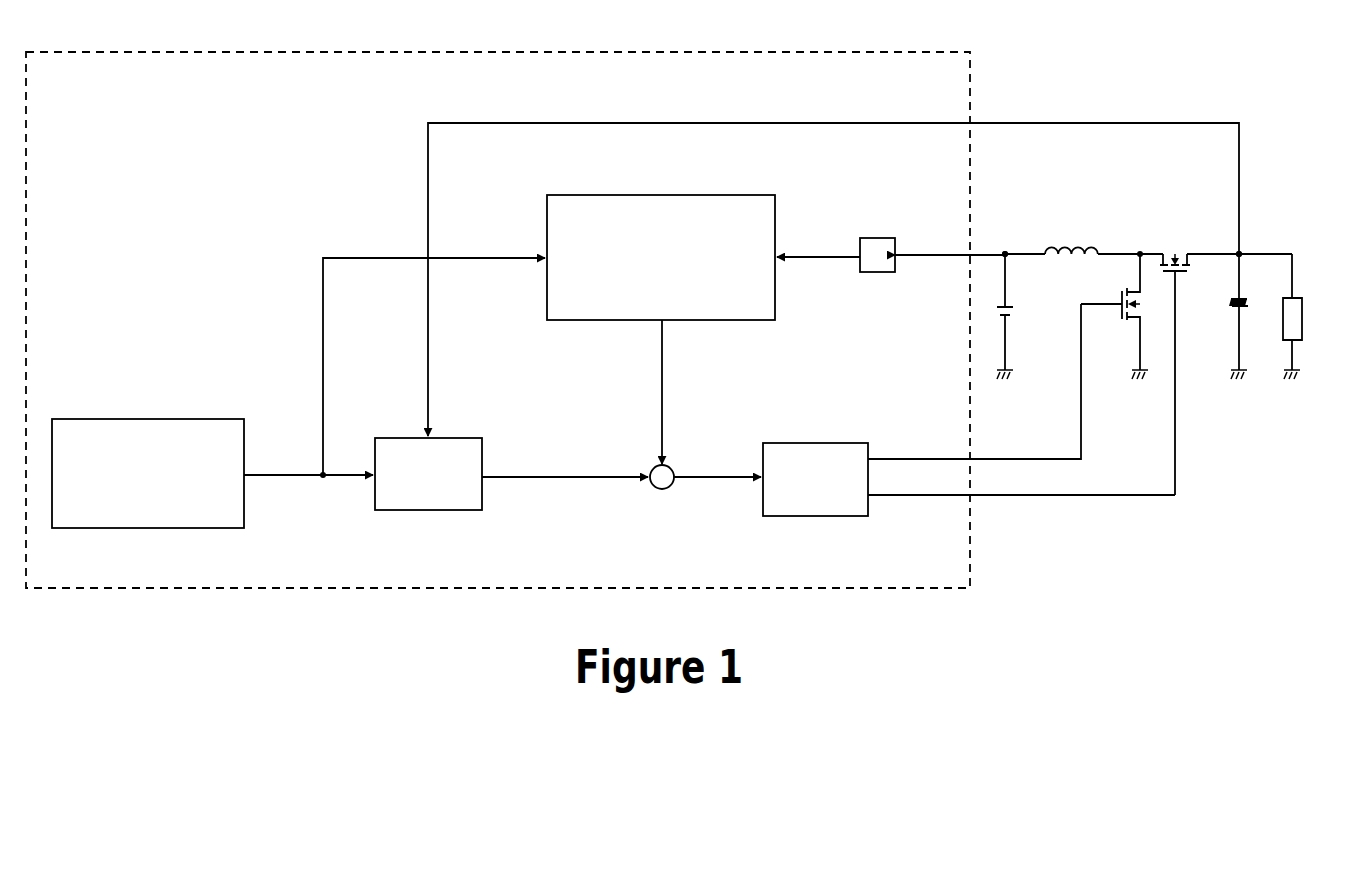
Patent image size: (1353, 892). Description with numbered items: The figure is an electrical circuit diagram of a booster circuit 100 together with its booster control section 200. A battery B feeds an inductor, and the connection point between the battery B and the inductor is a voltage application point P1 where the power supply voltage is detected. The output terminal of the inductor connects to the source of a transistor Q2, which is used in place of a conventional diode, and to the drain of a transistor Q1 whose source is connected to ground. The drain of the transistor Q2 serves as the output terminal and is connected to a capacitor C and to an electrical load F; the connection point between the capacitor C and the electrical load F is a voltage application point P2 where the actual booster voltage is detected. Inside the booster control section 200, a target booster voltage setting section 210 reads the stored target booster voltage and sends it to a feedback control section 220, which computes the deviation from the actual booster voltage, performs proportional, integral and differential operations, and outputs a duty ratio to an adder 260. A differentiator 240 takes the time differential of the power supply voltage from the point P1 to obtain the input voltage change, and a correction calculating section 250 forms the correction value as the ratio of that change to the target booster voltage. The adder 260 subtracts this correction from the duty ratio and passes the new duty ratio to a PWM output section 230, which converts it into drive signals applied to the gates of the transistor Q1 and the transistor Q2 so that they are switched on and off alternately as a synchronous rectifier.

The booster circuit 100 is at (1152, 31).
The booster control section 200 is at (122, 52).
The target booster voltage setting section 210 is at (86, 419).
The feedback control section 220 is at (442, 512).
The PWM output section 230 is at (837, 442).
The differentiator 240 is at (875, 239).
The correction calculating section 250 is at (576, 198).
The adder 260 is at (659, 494).
The voltage application point P1 is at (1005, 256).
The voltage application point P2 is at (1239, 254).
The transistor Q1 is at (1125, 294).
The transistor Q2 is at (1173, 272).
The battery B is at (1002, 310).
The capacitor C is at (1244, 306).
The electrical load F is at (1304, 318).